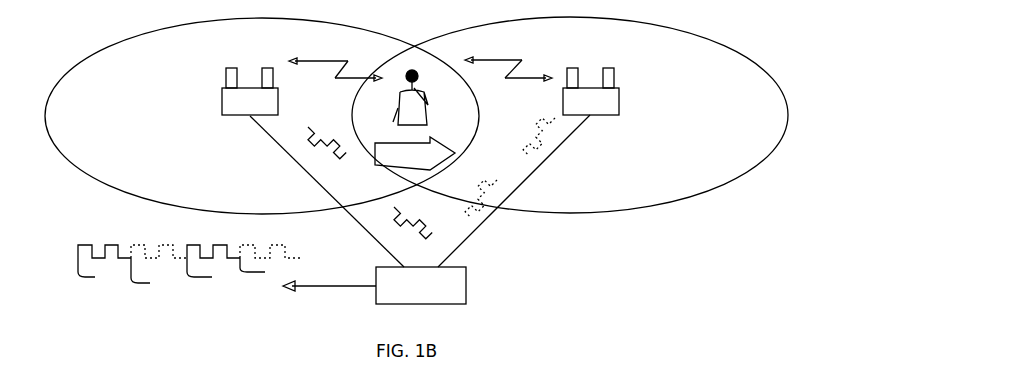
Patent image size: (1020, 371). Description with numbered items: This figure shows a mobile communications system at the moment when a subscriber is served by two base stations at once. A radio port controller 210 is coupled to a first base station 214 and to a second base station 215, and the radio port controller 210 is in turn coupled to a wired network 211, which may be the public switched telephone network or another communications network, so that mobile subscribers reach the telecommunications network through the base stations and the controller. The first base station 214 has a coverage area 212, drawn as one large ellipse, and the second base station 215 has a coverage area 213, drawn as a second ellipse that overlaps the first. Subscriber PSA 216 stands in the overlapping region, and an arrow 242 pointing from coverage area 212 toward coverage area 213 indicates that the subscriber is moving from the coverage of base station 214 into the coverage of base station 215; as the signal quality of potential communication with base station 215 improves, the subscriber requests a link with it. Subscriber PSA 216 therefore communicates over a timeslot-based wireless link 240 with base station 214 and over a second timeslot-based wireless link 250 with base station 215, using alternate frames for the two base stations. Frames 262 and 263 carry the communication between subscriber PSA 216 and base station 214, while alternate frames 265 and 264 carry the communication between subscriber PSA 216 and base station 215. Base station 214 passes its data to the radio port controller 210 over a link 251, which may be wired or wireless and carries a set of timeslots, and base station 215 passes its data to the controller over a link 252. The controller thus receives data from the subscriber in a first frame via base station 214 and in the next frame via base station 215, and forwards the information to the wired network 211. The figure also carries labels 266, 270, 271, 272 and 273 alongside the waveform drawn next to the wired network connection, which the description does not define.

The radio port controller 210 is at (466, 282).
The wired network 211 is at (185, 308).
The coverage area 212 is at (95, 178).
The coverage area 213 is at (690, 196).
The base station 214 is at (232, 116).
The base station 215 is at (612, 116).
The subscriber PS_A 216 is at (432, 120).
The wireless link 240 is at (320, 60).
The arrow 242 is at (415, 153).
The wireless link 250 is at (512, 58).
The link 251 is at (312, 185).
The link 252 is at (530, 178).
The frame 262 is at (310, 125).
The frame 263 is at (394, 213).
The alternate frame 264 is at (495, 184).
The alternate frame 265 is at (555, 118).
The bit stream / data frame sequence 266 is at (189, 268).
The first bit frame b1 270 is at (83, 241).
The second bit frame b2 271 is at (140, 241).
The third bit frame b1 272 is at (195, 241).
The fourth bit frame b2 273 is at (250, 241).